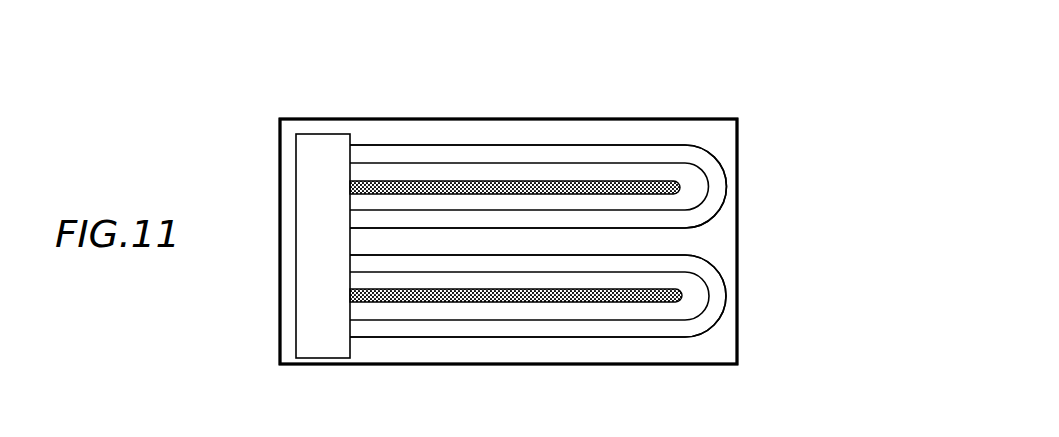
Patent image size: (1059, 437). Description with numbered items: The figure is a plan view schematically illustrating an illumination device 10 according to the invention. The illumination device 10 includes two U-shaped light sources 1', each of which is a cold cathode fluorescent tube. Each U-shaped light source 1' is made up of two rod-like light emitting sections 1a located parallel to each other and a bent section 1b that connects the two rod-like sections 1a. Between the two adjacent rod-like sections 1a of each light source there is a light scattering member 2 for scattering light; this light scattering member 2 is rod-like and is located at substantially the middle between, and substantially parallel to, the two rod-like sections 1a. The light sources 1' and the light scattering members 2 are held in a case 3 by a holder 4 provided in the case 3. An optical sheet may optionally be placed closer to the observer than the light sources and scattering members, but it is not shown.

The illumination device 10 is at (728, 54).
The case 3 is at (432, 118).
The holder 4 is at (324, 146).
The rod-like section 1a is at (592, 222).
The bent section 1b is at (699, 162).
The U-shaped light source 1' is at (538, 183).
The light scattering member 2 is at (470, 190).